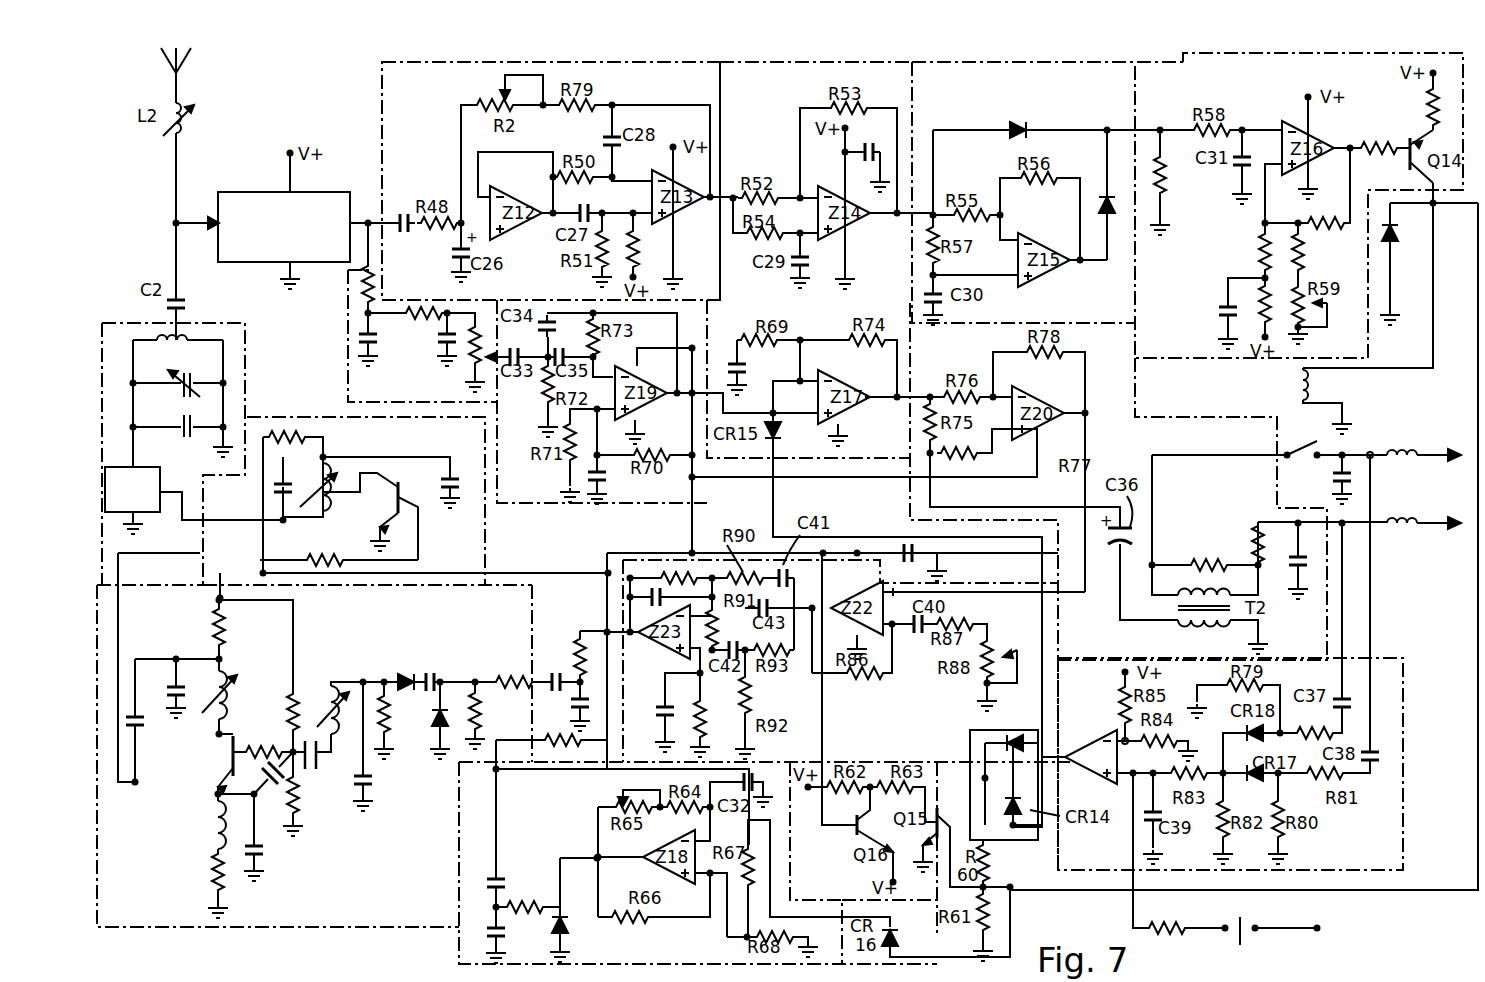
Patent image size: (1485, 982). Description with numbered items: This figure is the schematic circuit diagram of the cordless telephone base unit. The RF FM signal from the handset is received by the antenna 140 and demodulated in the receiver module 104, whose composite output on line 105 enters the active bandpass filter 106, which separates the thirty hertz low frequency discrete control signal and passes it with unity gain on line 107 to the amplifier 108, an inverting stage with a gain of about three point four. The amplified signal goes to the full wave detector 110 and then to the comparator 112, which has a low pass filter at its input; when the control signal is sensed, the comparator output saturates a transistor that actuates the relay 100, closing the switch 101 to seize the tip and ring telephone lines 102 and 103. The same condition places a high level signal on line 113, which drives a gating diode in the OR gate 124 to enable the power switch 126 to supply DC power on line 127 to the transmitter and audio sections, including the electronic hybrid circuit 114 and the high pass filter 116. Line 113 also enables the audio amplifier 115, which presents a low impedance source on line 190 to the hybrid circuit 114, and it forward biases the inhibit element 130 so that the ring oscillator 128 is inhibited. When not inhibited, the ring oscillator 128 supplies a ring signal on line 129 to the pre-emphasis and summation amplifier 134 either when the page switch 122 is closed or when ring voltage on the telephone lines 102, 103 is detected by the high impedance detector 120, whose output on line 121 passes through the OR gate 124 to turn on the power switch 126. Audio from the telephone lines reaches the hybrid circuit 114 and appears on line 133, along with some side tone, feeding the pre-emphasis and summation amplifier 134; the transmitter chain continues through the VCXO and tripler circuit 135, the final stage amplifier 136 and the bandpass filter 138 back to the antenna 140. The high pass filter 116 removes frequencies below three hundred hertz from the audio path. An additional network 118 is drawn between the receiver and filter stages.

The relay 100 is at (1295, 386).
The switch 101 is at (1310, 462).
The tip telephone line 102 is at (1450, 448).
The ring telephone line 103 is at (1450, 533).
The receiver module 104 is at (254, 192).
The line 105 is at (362, 215).
The active bandpass filter 106 is at (383, 97).
The line 107 is at (725, 195).
The amplifier 108 is at (860, 63).
The full wave detector 110 is at (1030, 63).
The comparator 112 is at (1183, 63).
The line 113 is at (1467, 378).
The electronic hybrid circuit 114 is at (1150, 410).
The audio amplifier 115 is at (780, 480).
The high pass filter 116 is at (575, 503).
The filter network 118 is at (350, 306).
The high impedance detector 120 is at (1407, 745).
The line 121 is at (1063, 750).
The page switch 122 is at (1250, 918).
The OR gate 124 is at (970, 742).
The power switch 126 is at (880, 762).
The line 127 is at (825, 720).
The ring oscillator 128 is at (457, 938).
The line 129 is at (555, 773).
The inhibit element 130 is at (860, 900).
The line 133 is at (1090, 465).
The pre-emphasis and summation amplifier 134 is at (621, 623).
The VCXO and tripler circuit 135 is at (318, 928).
The final stage amplifier 136 is at (328, 415).
The bandpass filter 138 is at (245, 378).
The antenna 140 is at (192, 59).
The line 190 is at (913, 393).